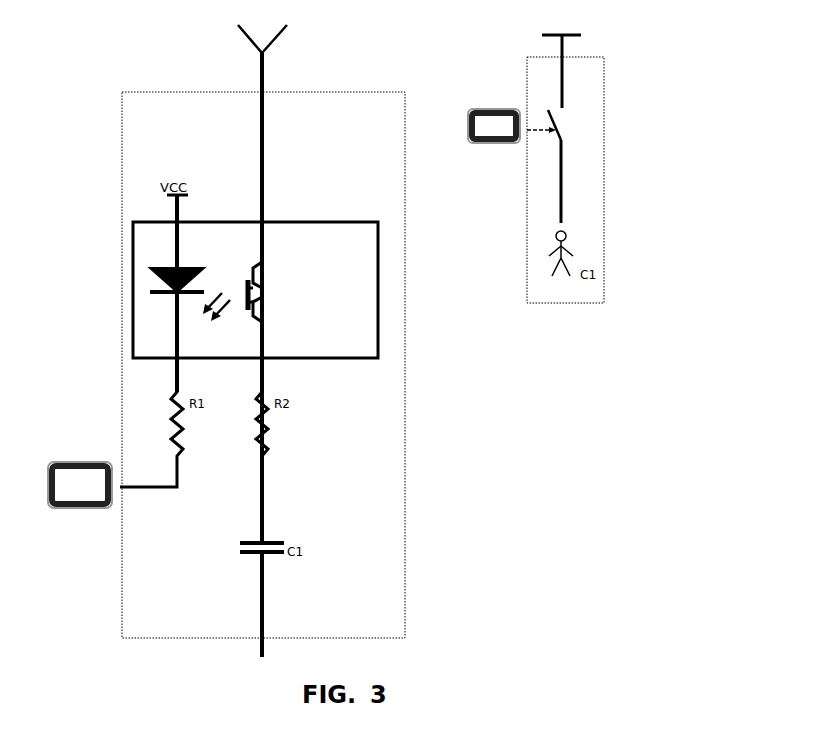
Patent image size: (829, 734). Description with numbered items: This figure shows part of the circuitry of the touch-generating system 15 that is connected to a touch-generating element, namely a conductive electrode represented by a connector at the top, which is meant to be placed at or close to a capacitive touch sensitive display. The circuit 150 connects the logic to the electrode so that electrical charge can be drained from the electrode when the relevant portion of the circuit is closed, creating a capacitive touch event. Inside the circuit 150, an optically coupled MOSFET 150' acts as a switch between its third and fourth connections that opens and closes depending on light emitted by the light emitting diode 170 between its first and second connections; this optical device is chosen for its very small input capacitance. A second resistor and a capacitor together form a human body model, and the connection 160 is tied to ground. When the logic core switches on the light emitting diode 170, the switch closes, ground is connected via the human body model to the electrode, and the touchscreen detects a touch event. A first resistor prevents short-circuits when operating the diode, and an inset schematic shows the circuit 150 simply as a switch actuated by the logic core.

The touch-generating system 15 is at (603, 188).
The circuitry 150 is at (301, 365).
The optically coupled MOSFET 150' is at (255, 290).
The connection 160 is at (265, 592).
The light emitting diode 170 is at (148, 278).